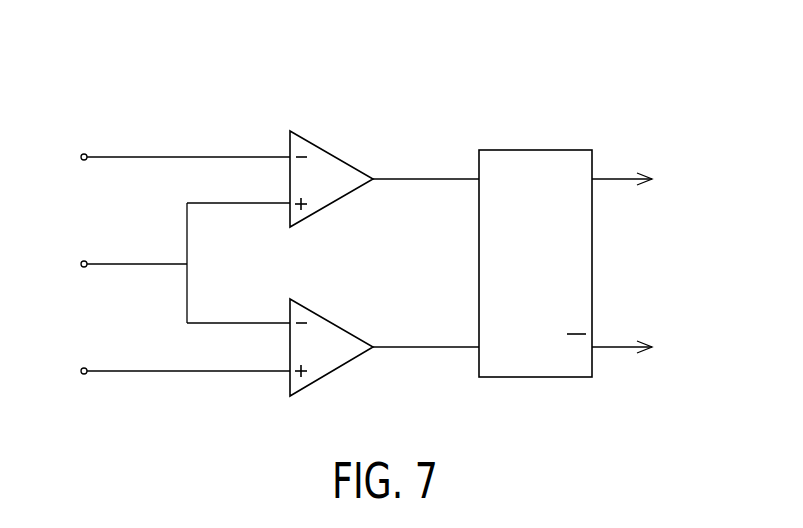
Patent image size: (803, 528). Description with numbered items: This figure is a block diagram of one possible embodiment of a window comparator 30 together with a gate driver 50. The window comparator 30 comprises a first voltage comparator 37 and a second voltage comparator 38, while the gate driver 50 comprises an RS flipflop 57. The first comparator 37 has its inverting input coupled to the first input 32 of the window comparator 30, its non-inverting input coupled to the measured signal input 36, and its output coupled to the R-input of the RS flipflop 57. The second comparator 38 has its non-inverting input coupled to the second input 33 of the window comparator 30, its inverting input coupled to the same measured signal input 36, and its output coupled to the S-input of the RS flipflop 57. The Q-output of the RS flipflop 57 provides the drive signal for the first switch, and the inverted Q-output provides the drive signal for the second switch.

The window comparator 30 is at (390, 83).
The gate driver 50 is at (545, 83).
The first input 32 is at (66, 147).
The measured signal input 36 is at (67, 255).
The second input 33 is at (66, 362).
The first voltage comparator 37 is at (333, 153).
The second voltage comparator 38 is at (333, 321).
The RS flipflop 57 is at (553, 276).